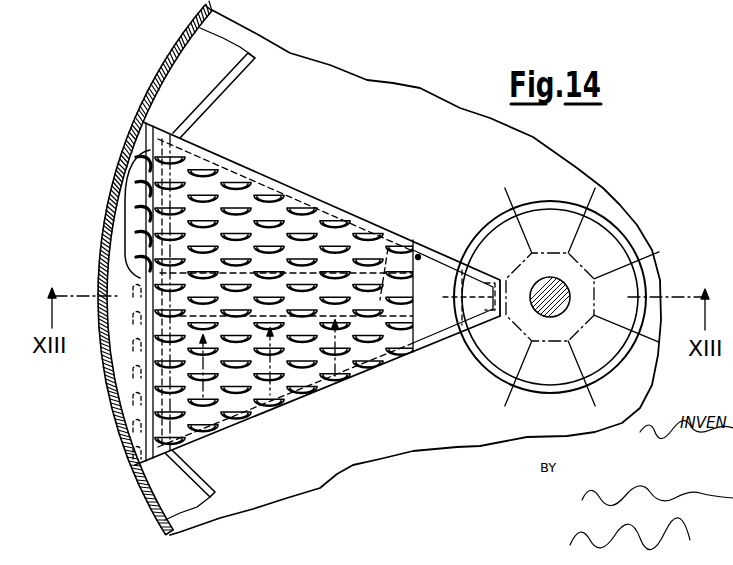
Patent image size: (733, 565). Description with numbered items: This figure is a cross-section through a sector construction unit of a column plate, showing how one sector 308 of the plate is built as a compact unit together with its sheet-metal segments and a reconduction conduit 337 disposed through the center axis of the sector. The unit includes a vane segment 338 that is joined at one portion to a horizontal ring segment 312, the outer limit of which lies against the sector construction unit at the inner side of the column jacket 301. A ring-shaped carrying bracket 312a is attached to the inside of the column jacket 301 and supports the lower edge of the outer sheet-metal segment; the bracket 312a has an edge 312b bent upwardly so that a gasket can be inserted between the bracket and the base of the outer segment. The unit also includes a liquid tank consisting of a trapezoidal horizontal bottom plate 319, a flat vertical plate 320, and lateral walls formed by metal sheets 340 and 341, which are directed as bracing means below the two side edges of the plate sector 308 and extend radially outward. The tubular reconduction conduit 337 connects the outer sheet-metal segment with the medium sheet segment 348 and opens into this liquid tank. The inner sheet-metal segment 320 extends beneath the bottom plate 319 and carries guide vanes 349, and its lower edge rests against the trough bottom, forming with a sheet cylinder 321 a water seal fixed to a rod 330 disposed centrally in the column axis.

The column jacket 301 is at (108, 196).
The vane segment 338 is at (134, 245).
The horizontal ring segment 312 is at (118, 342).
The ring-shaped carrying bracket 312a is at (178, 488).
The bent edge 312b is at (173, 457).
The sector 308 is at (312, 376).
The metal sheet 341 is at (417, 353).
The guide vanes 349 is at (453, 296).
The trapezoidal horizontal bottom plate 319 is at (440, 323).
The segment of the inner sheet cylinder 348 is at (419, 254).
The metal sheet 340 is at (443, 253).
The reconduction conduit 337 is at (388, 248).
The flat vertical plate 320 is at (533, 257).
The sheet cylinder 321 is at (608, 226).
The rod 330 is at (566, 285).